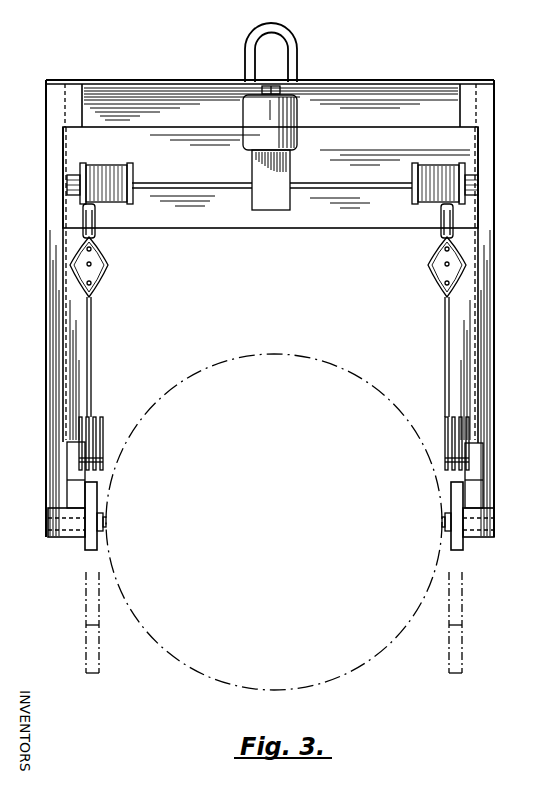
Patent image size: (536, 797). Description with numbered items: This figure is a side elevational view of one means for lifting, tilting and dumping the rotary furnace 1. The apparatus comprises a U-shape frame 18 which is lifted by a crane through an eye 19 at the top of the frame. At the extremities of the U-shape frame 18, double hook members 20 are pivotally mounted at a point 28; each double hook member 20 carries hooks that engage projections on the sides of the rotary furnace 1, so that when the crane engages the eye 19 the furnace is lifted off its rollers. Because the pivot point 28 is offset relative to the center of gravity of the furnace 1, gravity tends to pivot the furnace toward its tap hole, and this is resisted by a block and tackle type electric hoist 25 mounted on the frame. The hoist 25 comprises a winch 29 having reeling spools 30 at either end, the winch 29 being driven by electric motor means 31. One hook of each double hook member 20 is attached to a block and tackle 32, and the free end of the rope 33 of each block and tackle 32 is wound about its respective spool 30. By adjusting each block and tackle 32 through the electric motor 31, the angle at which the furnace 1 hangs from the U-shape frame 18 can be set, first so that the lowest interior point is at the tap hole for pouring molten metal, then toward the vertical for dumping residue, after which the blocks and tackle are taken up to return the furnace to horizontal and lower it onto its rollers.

The rotary furnace 1 is at (317, 358).
The U-shape frame 18 is at (46, 322).
The eye 19 is at (292, 66).
The double hook member 20 is at (97, 540).
The block and tackle type electric hoist 25 is at (240, 112).
The pivot point 28 is at (58, 528).
The winch 29 is at (343, 182).
The reeling spool 30 is at (108, 168).
The electric motor means 31 is at (291, 114).
The block and tackle 32 is at (130, 418).
The rope 33 is at (92, 370).